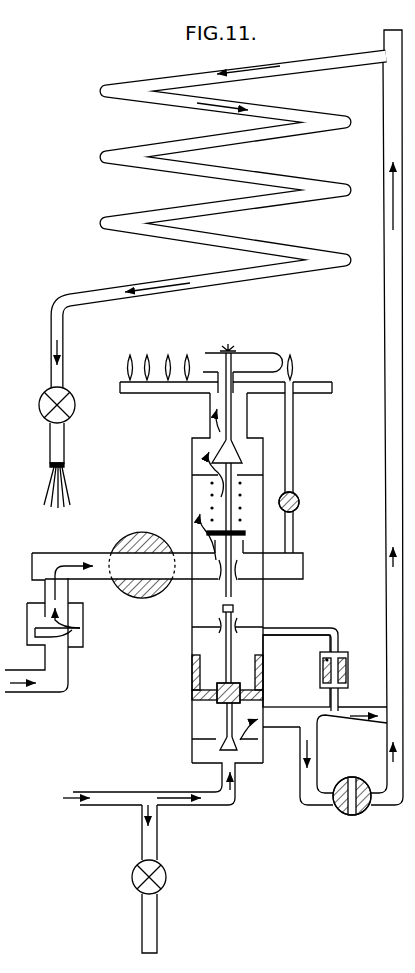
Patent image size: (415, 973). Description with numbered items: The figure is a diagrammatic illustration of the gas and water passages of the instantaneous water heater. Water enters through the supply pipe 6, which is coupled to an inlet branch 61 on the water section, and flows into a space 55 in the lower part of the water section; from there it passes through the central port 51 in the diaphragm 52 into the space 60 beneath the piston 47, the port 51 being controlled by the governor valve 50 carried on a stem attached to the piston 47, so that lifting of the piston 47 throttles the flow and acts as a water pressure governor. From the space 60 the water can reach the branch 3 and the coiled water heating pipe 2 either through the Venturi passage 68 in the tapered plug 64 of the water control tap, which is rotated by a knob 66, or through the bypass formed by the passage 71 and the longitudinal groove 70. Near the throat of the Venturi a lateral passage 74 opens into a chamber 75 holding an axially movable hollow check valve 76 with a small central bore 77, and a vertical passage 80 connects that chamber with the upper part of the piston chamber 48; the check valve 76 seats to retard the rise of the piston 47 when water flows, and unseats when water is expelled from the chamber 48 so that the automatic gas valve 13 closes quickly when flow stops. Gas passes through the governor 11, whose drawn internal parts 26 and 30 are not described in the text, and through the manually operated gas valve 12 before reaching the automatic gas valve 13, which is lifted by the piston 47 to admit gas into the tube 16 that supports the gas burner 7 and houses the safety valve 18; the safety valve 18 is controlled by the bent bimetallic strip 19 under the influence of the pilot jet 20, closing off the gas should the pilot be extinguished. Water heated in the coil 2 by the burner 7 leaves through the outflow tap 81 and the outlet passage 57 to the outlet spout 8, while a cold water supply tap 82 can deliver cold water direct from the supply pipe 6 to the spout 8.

The coiled water heating pipe 2 is at (181, 168).
The branch 3 is at (385, 487).
The water supply pipe 6 is at (103, 800).
The gas burner 7 is at (139, 384).
The outlet spout 8 is at (64, 445).
The governor 11 is at (28, 612).
The manually-operated gas valve 12 is at (146, 586).
The automatic gas valve 13 is at (199, 505).
The tube 16 is at (210, 413).
The safety valve 18 is at (207, 454).
The bent bimetallic strip 19 is at (255, 353).
The pilot jet 20 is at (294, 413).
The gas passage 26 is at (82, 612).
The valve plate 30 is at (57, 640).
The piston 47 is at (200, 675).
The piston chamber 48 is at (205, 645).
The governor valve 50 is at (220, 750).
The central port 51 is at (217, 737).
The diaphragm 52 is at (215, 738).
The space 55 is at (203, 762).
The outlet passage 57 is at (150, 838).
The space 60 is at (253, 730).
The inlet branch 61 is at (213, 800).
The tapered plug 64 is at (343, 805).
The knob 66 is at (352, 796).
The Venturi passage 68 is at (348, 716).
The longitudinal groove 70 is at (354, 798).
The passage 71 is at (303, 748).
The lateral passage 74 is at (338, 697).
The chamber 75 is at (348, 660).
The hollow check valve 76 is at (323, 672).
The small central bore 77 is at (346, 672).
The vertical passage 80 is at (299, 632).
The outflow tap 81 is at (75, 404).
The cold water supply tap 82 is at (142, 878).